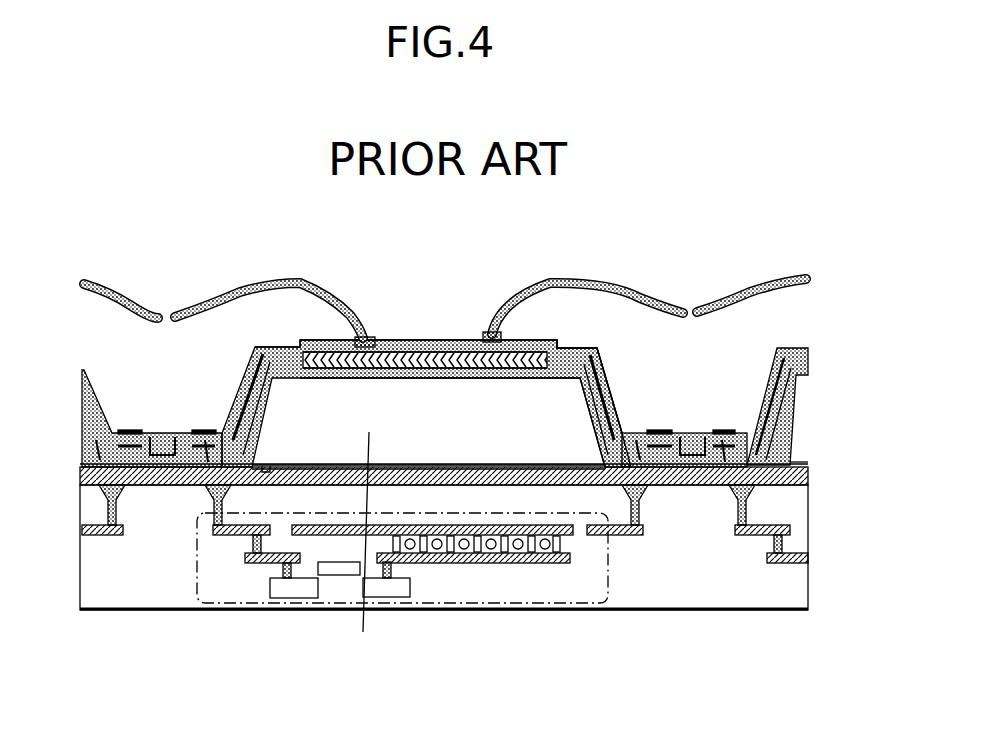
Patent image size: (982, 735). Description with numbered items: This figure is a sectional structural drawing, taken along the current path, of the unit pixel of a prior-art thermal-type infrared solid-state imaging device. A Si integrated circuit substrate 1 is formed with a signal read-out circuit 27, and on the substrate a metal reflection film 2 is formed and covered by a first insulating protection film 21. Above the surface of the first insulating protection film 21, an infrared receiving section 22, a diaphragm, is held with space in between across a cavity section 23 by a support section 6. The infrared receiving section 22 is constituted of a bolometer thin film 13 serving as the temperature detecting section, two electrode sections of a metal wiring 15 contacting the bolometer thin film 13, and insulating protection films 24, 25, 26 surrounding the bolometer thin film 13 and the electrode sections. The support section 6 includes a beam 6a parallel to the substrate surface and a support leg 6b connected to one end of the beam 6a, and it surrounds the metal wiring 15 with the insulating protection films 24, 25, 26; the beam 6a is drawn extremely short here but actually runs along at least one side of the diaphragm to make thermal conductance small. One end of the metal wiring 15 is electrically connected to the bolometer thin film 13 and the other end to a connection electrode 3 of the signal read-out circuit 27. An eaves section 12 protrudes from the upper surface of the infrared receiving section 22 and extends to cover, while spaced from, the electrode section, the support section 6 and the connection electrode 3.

The Si integrated circuit substrate 1 is at (690, 596).
The metal reflection film 2 is at (509, 470).
The connection electrode 3 is at (675, 437).
The support section 6 is at (683, 322).
The beam 6a is at (592, 343).
The support leg 6b is at (618, 380).
The eaves section 12 is at (283, 280).
The bolometer thin film 13 is at (398, 343).
The metal wiring 15 is at (245, 380).
The first insulating protection film 21 is at (446, 465).
The infrared receiving section 22 is at (447, 330).
The cavity section 23 is at (356, 549).
The insulating protection film 24 is at (236, 420).
The insulating protection film 25 is at (240, 400).
The insulating protection film 26 is at (250, 357).
The signal read-out circuit 27 is at (538, 602).